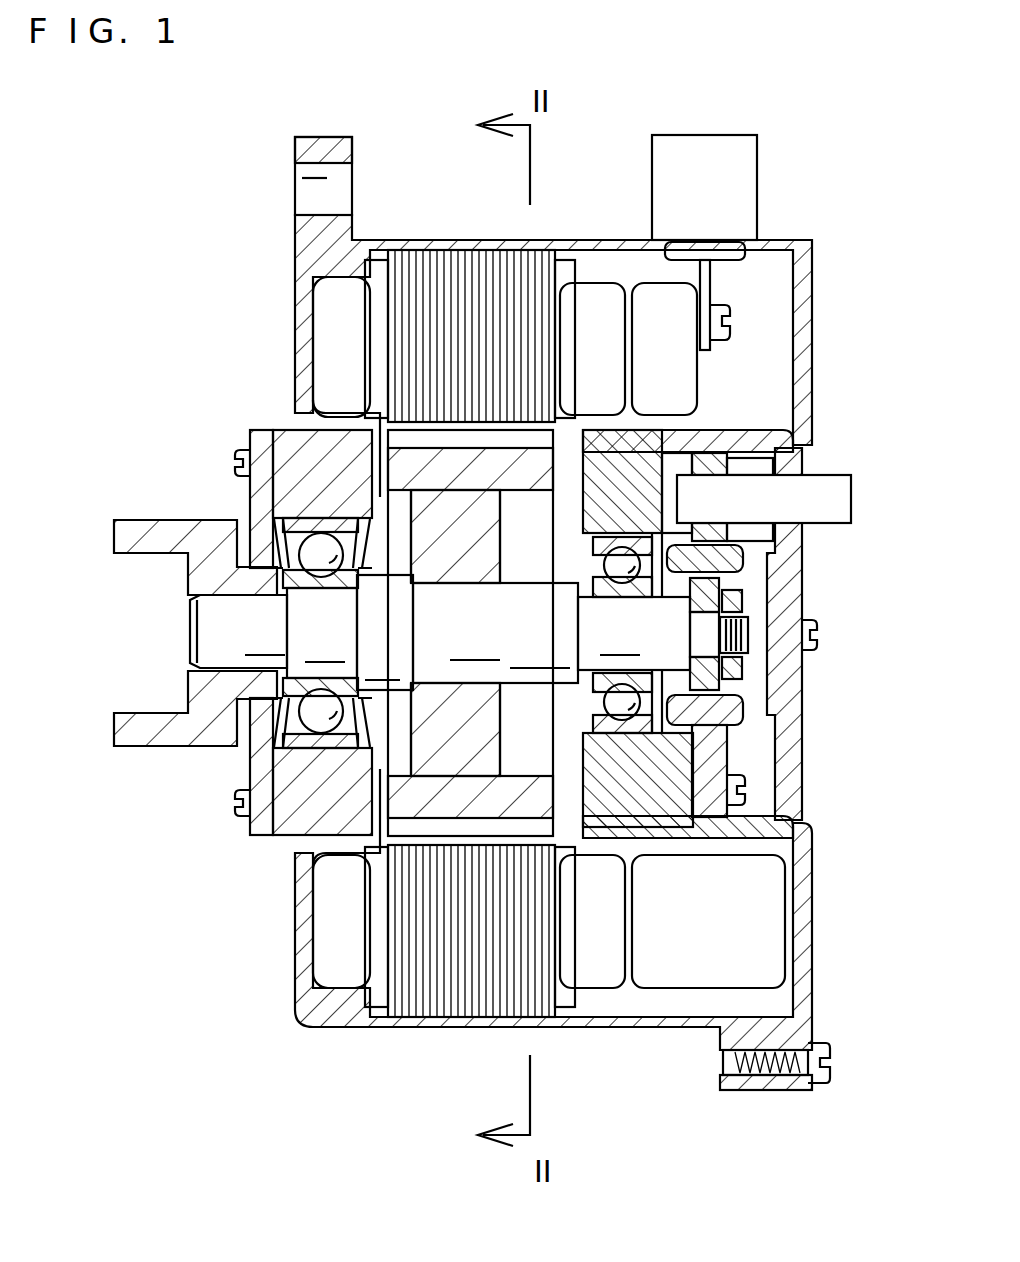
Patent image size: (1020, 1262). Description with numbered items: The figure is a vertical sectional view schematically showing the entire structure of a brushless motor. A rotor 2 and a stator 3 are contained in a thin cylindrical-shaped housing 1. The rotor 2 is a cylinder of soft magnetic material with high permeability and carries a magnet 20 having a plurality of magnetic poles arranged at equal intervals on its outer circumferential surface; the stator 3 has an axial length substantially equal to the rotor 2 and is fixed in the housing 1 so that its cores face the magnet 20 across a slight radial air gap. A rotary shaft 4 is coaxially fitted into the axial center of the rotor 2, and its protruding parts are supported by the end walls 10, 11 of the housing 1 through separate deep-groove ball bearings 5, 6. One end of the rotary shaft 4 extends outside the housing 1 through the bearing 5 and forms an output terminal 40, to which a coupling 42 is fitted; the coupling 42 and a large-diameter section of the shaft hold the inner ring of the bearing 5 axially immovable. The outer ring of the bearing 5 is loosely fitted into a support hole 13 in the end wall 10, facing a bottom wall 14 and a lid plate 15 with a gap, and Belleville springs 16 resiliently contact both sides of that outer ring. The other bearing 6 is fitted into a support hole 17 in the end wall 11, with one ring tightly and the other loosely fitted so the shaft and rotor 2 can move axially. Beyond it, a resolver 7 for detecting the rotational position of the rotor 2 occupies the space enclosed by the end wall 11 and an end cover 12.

The housing 1 is at (500, 245).
The rotor 2 is at (493, 713).
The stator 3 is at (428, 258).
The rotary shaft 4 is at (528, 593).
The bearing 5 is at (275, 813).
The bearing 6 is at (630, 740).
The resolver 7 is at (737, 685).
The end wall 10 is at (287, 432).
The end wall 11 is at (625, 440).
The end cover 12 is at (796, 585).
The support hole 13 is at (252, 503).
The bottom wall 14 is at (388, 542).
The lid plate 15 is at (247, 447).
The Belleville springs 16 is at (392, 745).
The support hole 17 is at (663, 551).
The magnet 20 is at (413, 430).
The output terminal 40 is at (210, 633).
The coupling 42 is at (160, 520).